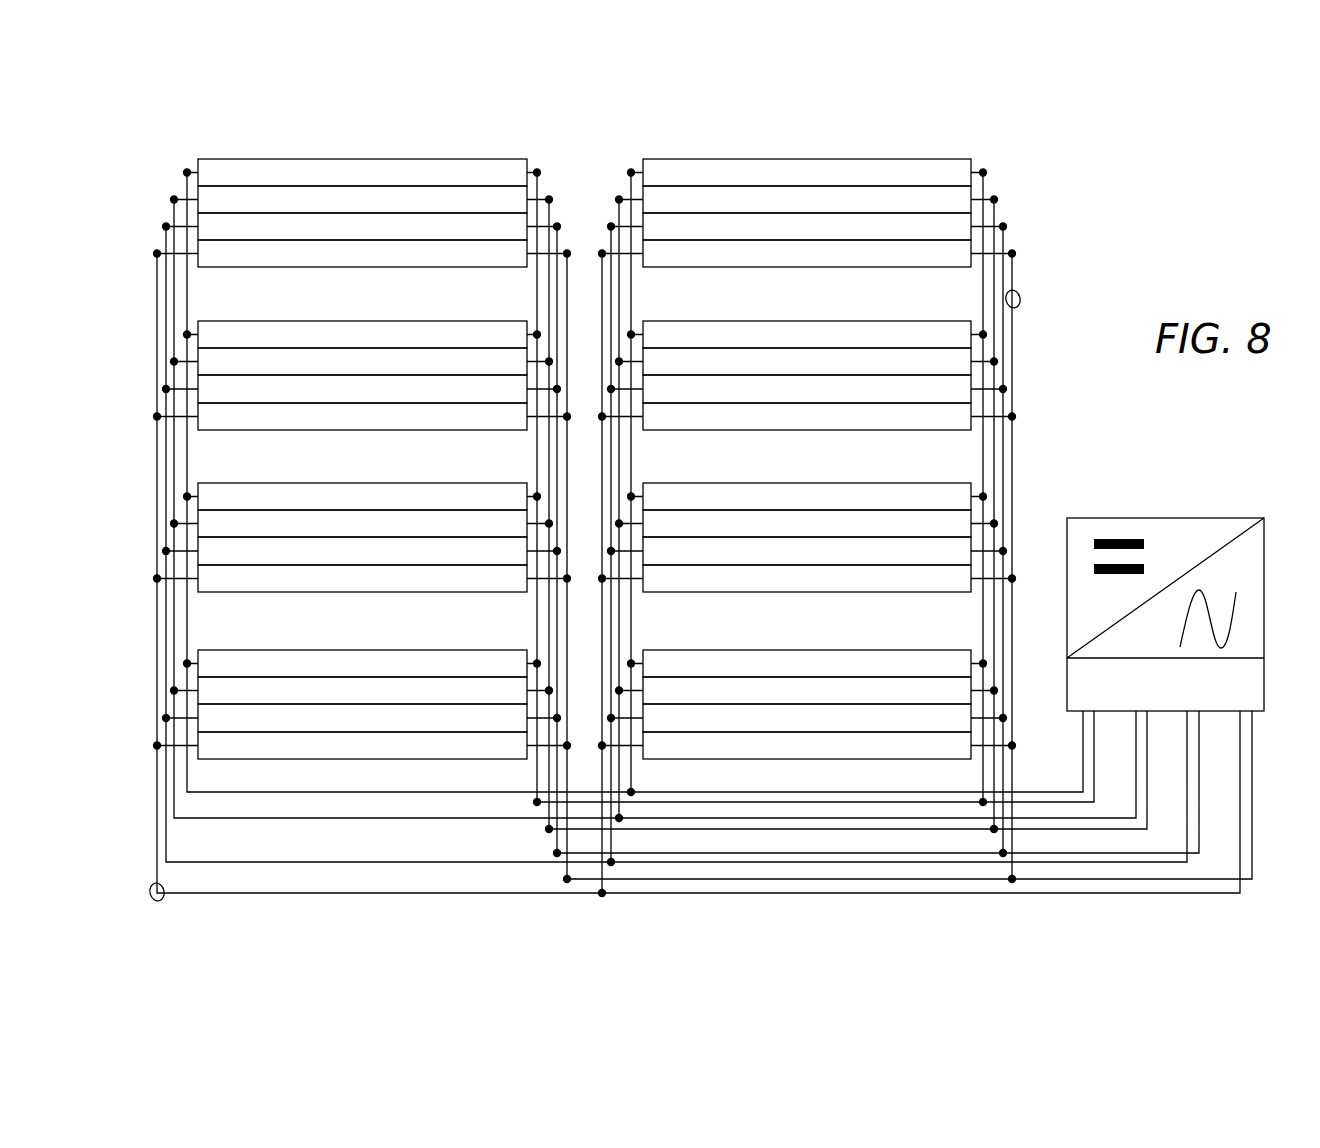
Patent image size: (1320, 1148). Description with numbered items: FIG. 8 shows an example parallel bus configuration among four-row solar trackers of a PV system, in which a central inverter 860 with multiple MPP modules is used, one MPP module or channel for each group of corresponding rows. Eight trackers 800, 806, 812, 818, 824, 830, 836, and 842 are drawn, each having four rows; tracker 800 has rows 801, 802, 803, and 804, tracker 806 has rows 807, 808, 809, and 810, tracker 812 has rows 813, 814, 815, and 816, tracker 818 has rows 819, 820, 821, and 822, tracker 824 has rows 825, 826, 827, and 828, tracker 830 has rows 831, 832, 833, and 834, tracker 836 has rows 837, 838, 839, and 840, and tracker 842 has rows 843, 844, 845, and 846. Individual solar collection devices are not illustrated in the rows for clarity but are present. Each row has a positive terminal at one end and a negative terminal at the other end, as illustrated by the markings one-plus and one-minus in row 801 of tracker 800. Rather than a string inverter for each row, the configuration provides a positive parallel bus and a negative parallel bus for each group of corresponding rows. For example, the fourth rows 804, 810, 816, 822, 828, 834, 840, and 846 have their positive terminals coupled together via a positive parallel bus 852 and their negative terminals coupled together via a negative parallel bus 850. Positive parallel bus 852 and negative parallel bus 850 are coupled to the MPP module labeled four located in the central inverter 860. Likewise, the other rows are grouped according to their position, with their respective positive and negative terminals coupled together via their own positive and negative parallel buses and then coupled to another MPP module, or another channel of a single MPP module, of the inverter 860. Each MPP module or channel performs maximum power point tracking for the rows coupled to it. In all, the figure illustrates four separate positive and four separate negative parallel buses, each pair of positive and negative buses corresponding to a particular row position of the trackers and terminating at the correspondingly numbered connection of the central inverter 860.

The tracker 800 is at (327, 158).
The row 801 is at (380, 181).
The row 802 is at (380, 208).
The row 803 is at (380, 235).
The row 804 is at (380, 262).
The tracker 806 is at (327, 321).
The row 807 is at (380, 343).
The row 808 is at (380, 370).
The row 809 is at (380, 397).
The row 810 is at (380, 425).
The tracker 812 is at (327, 483).
The row 813 is at (380, 505).
The row 814 is at (380, 532).
The row 815 is at (380, 559).
The row 816 is at (380, 587).
The tracker 818 is at (327, 650).
The row 819 is at (380, 672).
The row 820 is at (380, 699).
The row 821 is at (380, 726).
The row 822 is at (380, 754).
The tracker 824 is at (772, 158).
The row 825 is at (825, 181).
The row 826 is at (825, 208).
The row 827 is at (825, 235).
The row 828 is at (825, 262).
The tracker 830 is at (772, 321).
The row 831 is at (825, 343).
The row 832 is at (825, 370).
The row 833 is at (825, 397).
The row 834 is at (825, 425).
The tracker 836 is at (772, 483).
The row 837 is at (825, 505).
The row 838 is at (825, 532).
The row 839 is at (825, 559).
The row 840 is at (825, 587).
The tracker 842 is at (772, 650).
The row 843 is at (825, 672).
The row 844 is at (825, 699).
The row 845 is at (825, 726).
The row 846 is at (825, 754).
The negative parallel bus 850 is at (151, 885).
The positive parallel bus 852 is at (1019, 291).
The central inverter 860 is at (1142, 518).